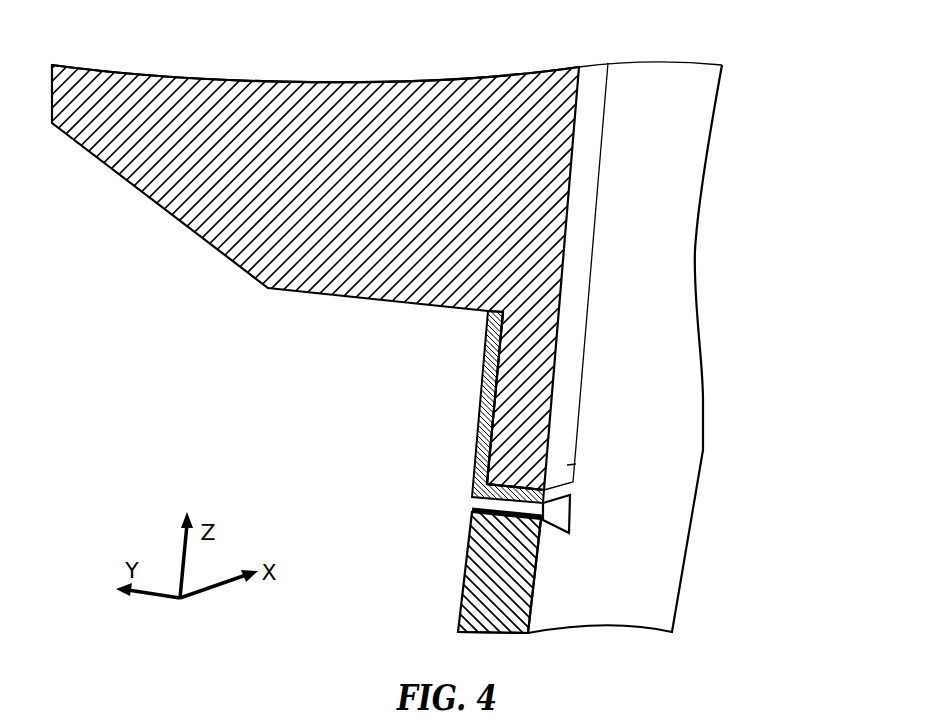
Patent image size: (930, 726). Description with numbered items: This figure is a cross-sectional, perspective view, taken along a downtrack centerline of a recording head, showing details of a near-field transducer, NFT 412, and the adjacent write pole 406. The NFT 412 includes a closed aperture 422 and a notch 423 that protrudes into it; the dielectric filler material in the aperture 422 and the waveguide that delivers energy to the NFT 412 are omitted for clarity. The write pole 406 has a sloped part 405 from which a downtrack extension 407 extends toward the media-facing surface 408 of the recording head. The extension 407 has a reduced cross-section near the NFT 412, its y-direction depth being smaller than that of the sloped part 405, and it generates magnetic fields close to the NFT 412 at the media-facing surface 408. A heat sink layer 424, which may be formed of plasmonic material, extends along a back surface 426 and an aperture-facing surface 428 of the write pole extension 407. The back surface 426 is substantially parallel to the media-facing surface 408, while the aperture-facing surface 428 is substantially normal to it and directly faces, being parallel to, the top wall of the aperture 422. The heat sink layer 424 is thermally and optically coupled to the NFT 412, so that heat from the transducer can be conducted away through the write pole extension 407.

The sloped part 405 is at (250, 247).
The write pole 406 is at (328, 95).
The downtrack extension 407 is at (567, 465).
The media-facing surface 408 is at (680, 385).
The near-field transducer 412 is at (430, 556).
The closed aperture 422 is at (558, 520).
The notch 423 is at (538, 540).
The heat sink layer 424 is at (482, 385).
The back surface 426 is at (482, 427).
The aperture-facing surface 428 is at (500, 488).